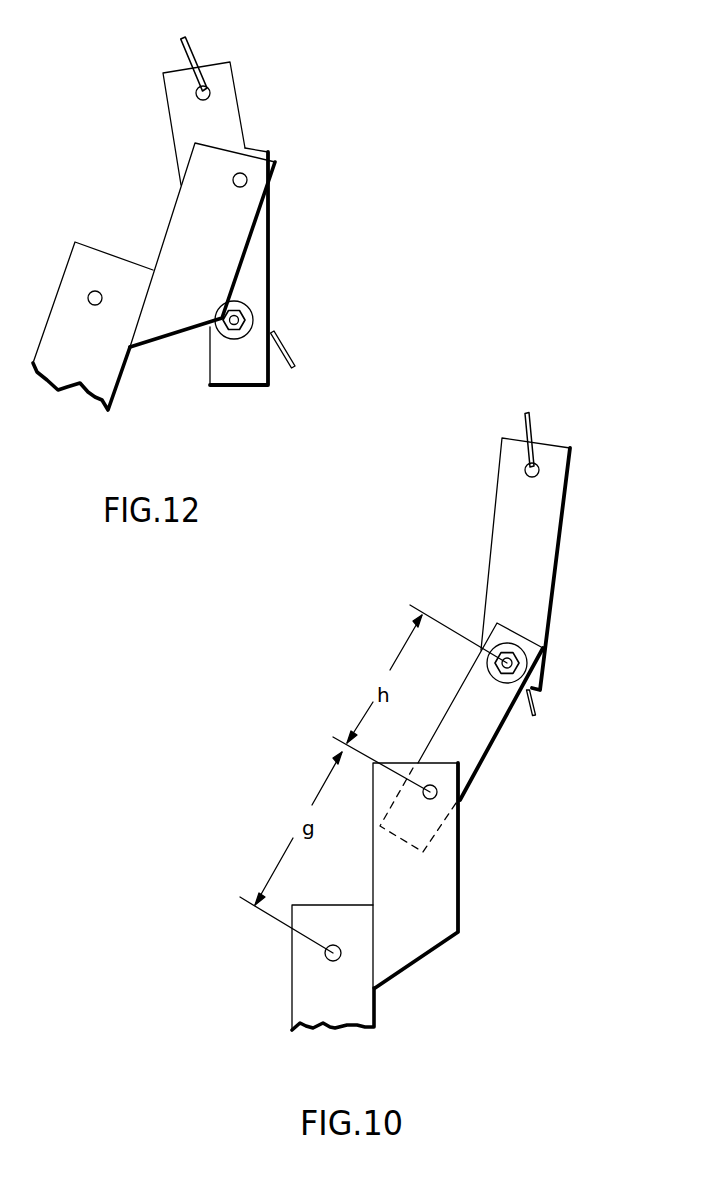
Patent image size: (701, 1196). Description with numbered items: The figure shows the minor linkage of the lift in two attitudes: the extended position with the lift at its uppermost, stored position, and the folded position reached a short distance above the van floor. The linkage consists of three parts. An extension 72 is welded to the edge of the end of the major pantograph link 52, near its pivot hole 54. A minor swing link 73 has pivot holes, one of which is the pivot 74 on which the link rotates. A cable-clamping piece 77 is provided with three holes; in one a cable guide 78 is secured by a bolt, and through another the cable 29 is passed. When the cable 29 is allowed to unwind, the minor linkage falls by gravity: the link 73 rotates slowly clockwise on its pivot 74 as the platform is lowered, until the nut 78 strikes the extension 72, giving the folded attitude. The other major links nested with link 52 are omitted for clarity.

In FIG. 12, the cable 29 is at (194, 47).
In FIG. 10, the cable 29 is at (532, 421).
In FIG. 12, the link 52 is at (76, 258).
In FIG. 10, the link 52 is at (367, 1008).
In FIG. 12, the pivot hole 54 is at (91, 306).
In FIG. 10, the pivot hole 54 is at (333, 962).
In FIG. 12, the extension 72 is at (179, 212).
In FIG. 10, the extension 72 is at (381, 873).
In FIG. 12, the link 73 is at (258, 253).
In FIG. 10, the link 73 is at (472, 760).
In FIG. 10, the pivot hole 74 is at (425, 801).
In FIG. 12, the cable-clamping piece 77 is at (176, 100).
In FIG. 10, the cable-clamping piece 77 is at (497, 543).
In FIG. 12, the cable guide 78 is at (234, 332).
In FIG. 10, the cable guide 78 is at (509, 664).